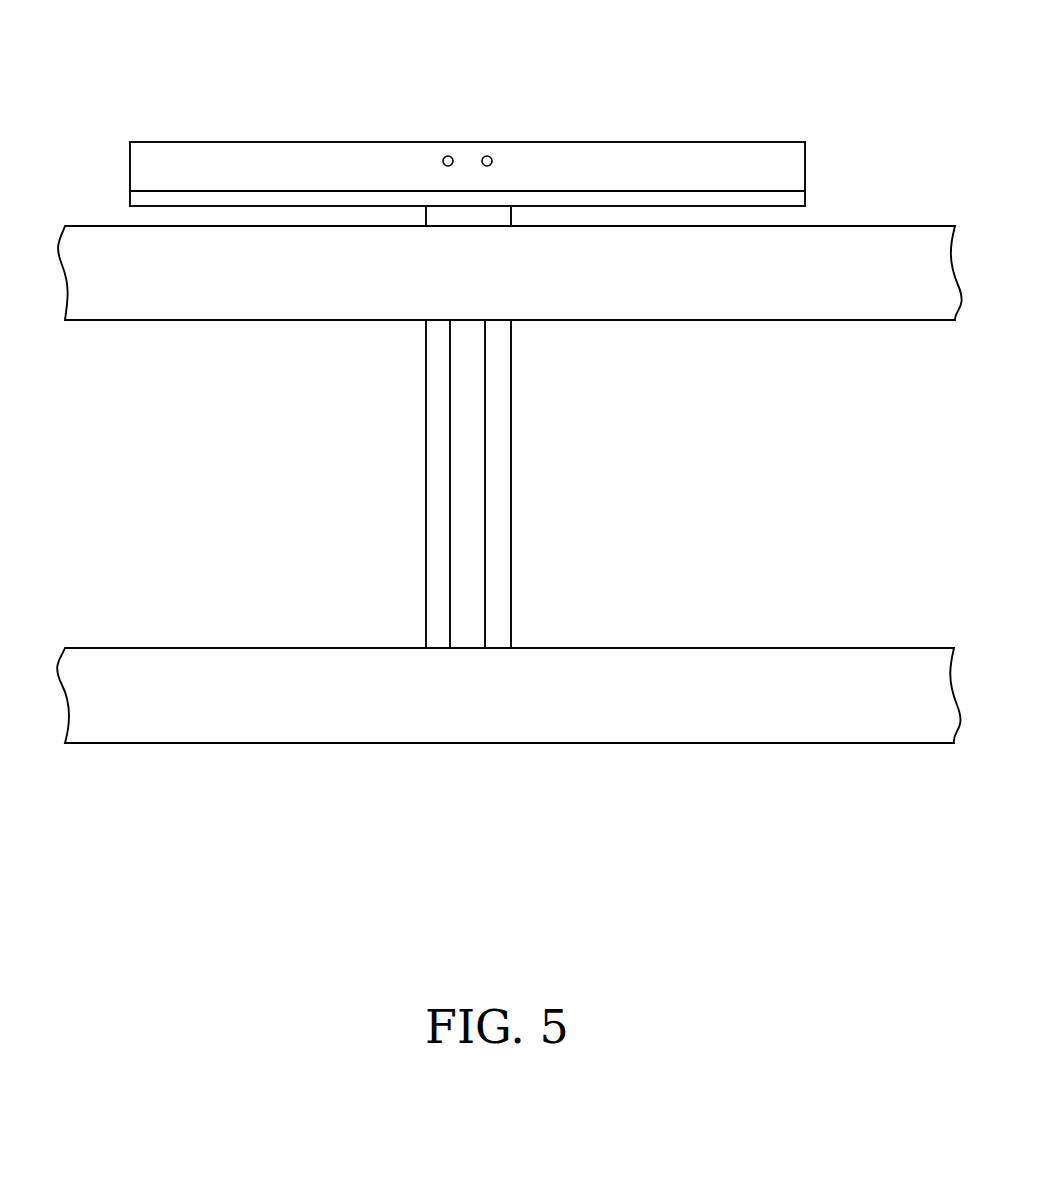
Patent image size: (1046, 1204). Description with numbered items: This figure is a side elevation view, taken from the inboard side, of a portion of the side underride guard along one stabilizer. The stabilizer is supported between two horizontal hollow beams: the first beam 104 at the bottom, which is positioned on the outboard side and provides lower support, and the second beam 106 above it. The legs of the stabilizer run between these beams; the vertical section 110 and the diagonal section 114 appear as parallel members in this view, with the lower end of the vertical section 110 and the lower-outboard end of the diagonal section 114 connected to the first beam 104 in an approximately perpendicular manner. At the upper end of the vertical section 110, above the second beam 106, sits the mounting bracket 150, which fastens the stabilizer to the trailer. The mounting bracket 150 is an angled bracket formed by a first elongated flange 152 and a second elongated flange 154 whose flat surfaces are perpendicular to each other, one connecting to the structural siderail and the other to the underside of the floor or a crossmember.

The first beam 104 is at (227, 713).
The second beam 106 is at (117, 255).
The vertical section 110 is at (437, 537).
The diagonal section 114 is at (468, 552).
The mounting bracket 150 is at (518, 116).
The first elongated flange 152 is at (802, 170).
The second elongated flange 154 is at (806, 199).